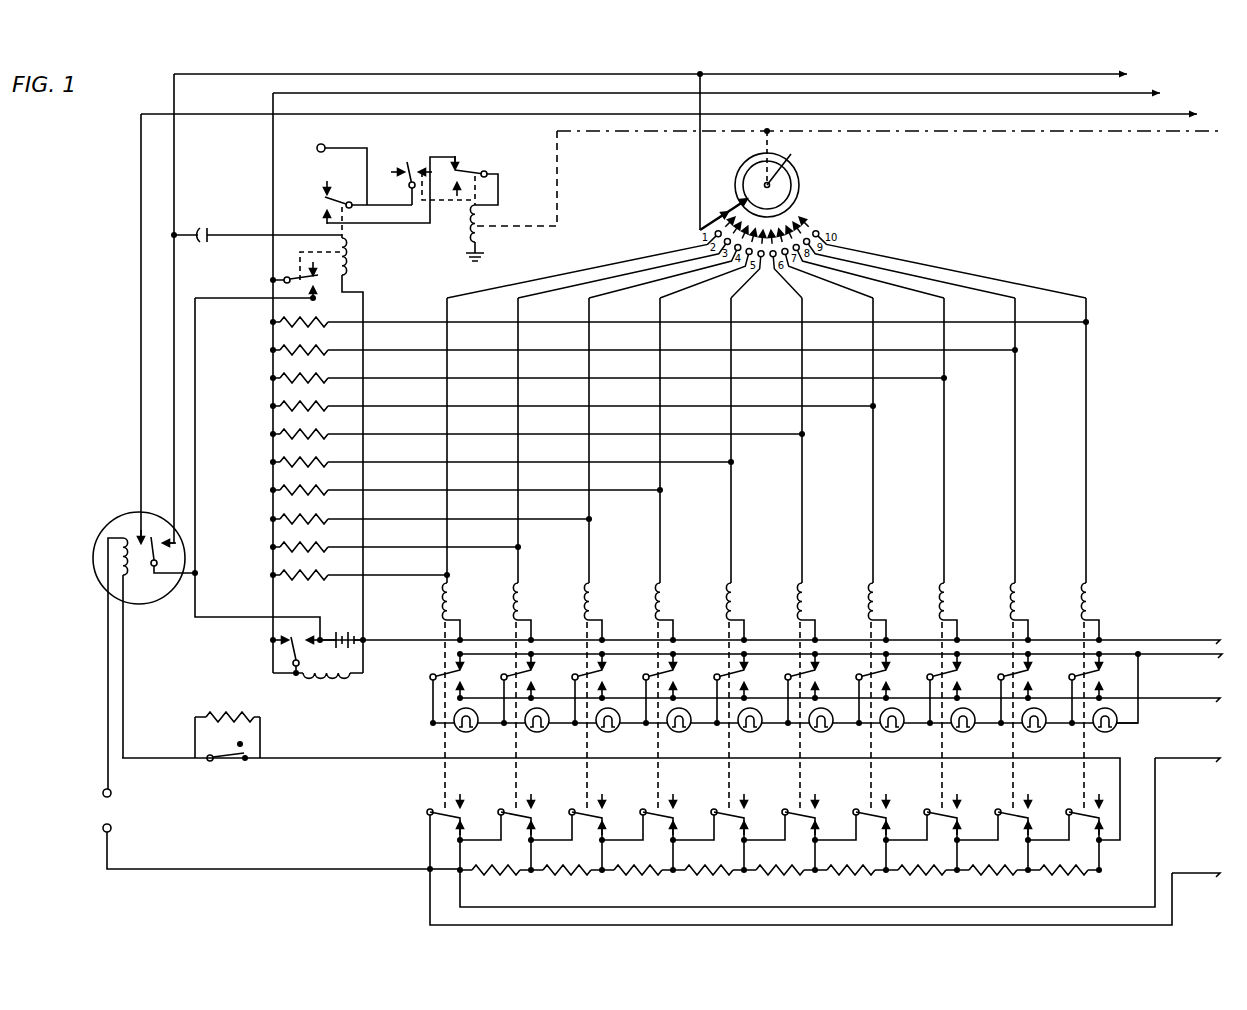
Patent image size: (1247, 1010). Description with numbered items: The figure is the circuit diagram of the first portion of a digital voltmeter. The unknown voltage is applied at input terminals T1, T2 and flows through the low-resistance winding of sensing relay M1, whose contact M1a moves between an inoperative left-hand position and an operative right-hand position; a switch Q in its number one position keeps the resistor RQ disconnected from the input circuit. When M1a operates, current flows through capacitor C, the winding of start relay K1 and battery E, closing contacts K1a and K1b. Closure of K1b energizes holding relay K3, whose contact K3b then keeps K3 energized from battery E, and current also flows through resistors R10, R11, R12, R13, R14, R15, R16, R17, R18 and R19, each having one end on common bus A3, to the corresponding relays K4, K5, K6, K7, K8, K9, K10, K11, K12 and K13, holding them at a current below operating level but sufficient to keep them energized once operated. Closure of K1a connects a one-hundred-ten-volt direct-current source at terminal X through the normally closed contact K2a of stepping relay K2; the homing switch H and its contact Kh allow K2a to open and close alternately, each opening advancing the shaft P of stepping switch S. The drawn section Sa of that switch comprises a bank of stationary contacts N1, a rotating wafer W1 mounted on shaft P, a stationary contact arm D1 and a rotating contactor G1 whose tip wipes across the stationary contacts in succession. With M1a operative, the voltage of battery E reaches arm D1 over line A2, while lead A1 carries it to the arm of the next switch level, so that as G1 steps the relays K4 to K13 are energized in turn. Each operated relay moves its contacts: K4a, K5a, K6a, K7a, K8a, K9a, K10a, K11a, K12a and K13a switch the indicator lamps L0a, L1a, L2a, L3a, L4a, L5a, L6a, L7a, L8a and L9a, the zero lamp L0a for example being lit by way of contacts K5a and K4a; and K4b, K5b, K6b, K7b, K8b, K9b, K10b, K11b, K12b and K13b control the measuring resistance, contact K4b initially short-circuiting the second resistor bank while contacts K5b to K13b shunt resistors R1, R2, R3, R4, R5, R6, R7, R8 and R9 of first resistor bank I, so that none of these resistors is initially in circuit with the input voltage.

The lead A1 is at (124, 407).
The line A2 is at (176, 278).
The common bus A3 is at (240, 376).
The terminal X is at (317, 149).
The start relay K1 is at (357, 440).
The start relay contact K1a is at (325, 194).
The start relay contact K1b is at (288, 275).
The homing switch contact Kh is at (406, 181).
The homing switch H is at (412, 161).
The stepping relay K2 is at (468, 242).
The stepping relay contact K2a is at (502, 166).
The capacitor C is at (202, 229).
The stepping switch S is at (833, 169).
The stepping switch section Sa is at (800, 177).
The rotating contactor G1 is at (742, 165).
The shaft P is at (785, 158).
The stationary contact arm D1 is at (728, 201).
The rotating wafer W1 is at (785, 191).
The stationary contacts N1 is at (818, 214).
The resistor R10 is at (321, 318).
The resistor R11 is at (321, 346).
The resistor R12 is at (321, 374).
The resistor R13 is at (321, 402).
The resistor R14 is at (321, 430).
The resistor R15 is at (321, 458).
The resistor R16 is at (321, 486).
The resistor R17 is at (321, 515).
The resistor R18 is at (321, 543).
The resistor R19 is at (321, 571).
The sensing relay M1 is at (118, 529).
The sensing relay contact M1a is at (150, 565).
The holding relay K3 is at (329, 684).
The holding relay contact K3b is at (282, 650).
The battery E is at (343, 627).
The resistor RQ is at (209, 710).
The switch Q is at (226, 764).
The input terminal T1 is at (110, 796).
The input terminal T2 is at (110, 831).
The relay K4 is at (454, 602).
The relay contact K4a is at (432, 672).
The relay contact K4b is at (429, 810).
The relay K5 is at (525, 602).
The relay contact K5a is at (503, 672).
The relay contact K5b is at (500, 810).
The relay K6 is at (596, 602).
The relay contact K6a is at (574, 672).
The relay contact K6b is at (571, 810).
The relay K7 is at (667, 602).
The relay contact K7a is at (645, 672).
The relay contact K7b is at (642, 810).
The relay K8 is at (738, 602).
The relay contact K8a is at (716, 672).
The relay contact K8b is at (713, 810).
The relay K9 is at (809, 602).
The relay contact K9a is at (787, 672).
The relay contact K9b is at (784, 810).
The relay K10 is at (880, 602).
The relay contact K10a is at (858, 672).
The relay contact K10b is at (855, 810).
The relay K11 is at (951, 602).
The relay contact K11a is at (929, 672).
The relay contact K11b is at (926, 810).
The relay K12 is at (1022, 602).
The relay contact K12a is at (1000, 672).
The relay contact K12b is at (997, 810).
The relay K13 is at (1093, 602).
The relay contact K13a is at (1071, 672).
The relay contact K13b is at (1068, 810).
The zero lamp L0a is at (458, 732).
The lamp L1a is at (529, 732).
The lamp L2a is at (600, 732).
The lamp L3a is at (671, 732).
The lamp L4a is at (742, 732).
The lamp L5a is at (813, 732).
The lamp L6a is at (884, 732).
The lamp L7a is at (955, 732).
The lamp L8a is at (1026, 732).
The lamp L9a is at (1097, 732).
The resistor R1 is at (495, 880).
The resistor R2 is at (566, 880).
The resistor R3 is at (637, 880).
The resistor R4 is at (708, 880).
The resistor R5 is at (779, 880).
The resistor R6 is at (850, 880).
The resistor R7 is at (921, 880).
The resistor R8 is at (992, 880).
The resistor R9 is at (1063, 880).
The first resistor bank I is at (1107, 874).